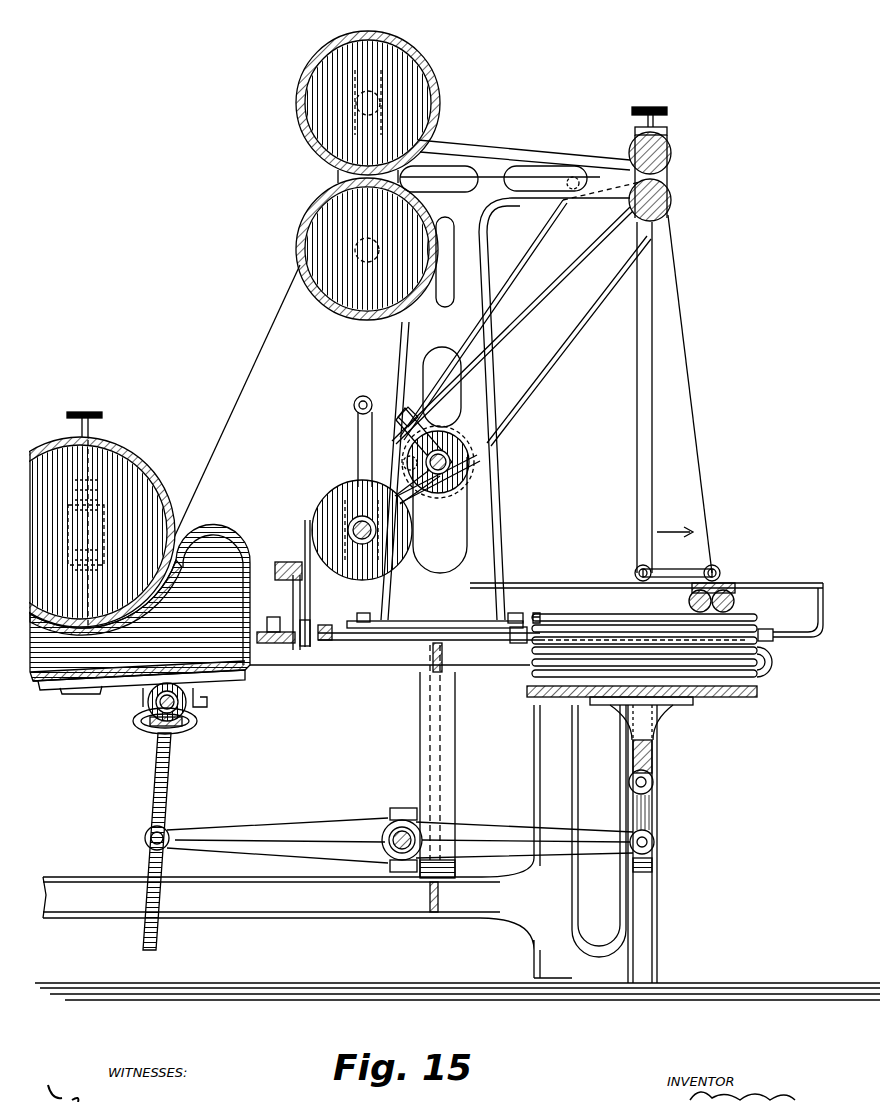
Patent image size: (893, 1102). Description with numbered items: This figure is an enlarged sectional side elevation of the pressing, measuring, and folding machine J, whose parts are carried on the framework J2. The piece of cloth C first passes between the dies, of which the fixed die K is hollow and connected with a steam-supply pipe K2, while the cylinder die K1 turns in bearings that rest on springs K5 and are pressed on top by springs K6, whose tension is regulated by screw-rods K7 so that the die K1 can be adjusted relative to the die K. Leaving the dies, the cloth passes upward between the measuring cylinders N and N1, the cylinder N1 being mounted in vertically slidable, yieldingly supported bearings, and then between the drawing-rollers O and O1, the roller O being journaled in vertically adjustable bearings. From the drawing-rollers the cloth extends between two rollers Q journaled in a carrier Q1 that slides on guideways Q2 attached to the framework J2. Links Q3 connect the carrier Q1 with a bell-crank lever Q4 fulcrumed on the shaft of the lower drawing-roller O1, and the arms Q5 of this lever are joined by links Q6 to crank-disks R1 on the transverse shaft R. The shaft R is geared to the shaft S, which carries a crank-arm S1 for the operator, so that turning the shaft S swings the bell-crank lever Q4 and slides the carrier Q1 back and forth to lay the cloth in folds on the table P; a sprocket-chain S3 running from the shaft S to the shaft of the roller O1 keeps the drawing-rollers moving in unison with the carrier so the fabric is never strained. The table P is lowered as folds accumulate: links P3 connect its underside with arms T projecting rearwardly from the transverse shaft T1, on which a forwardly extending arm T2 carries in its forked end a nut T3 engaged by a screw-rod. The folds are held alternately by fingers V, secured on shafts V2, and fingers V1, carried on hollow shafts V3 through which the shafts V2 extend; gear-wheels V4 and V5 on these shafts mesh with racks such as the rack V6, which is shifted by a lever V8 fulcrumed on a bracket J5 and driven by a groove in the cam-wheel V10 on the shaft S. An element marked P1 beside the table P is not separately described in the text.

The measuring-machine cylinder N1 is at (297, 112).
The measuring-machine cylinder N is at (298, 244).
The drawing-roller O is at (672, 154).
The drawing-roller O1 is at (672, 204).
The links Q6 is at (530, 252).
The arms of bell-crank lever Q5 is at (617, 225).
The bell-crank lever Q4 is at (640, 421).
The piece of cloth C is at (238, 379).
The screw-rods K7 is at (90, 412).
The springs K6 is at (90, 490).
The die K1 is at (128, 468).
The steam-supply pipe K2 is at (85, 527).
The springs K5 is at (88, 553).
The die K is at (234, 521).
The crank-arm S1 is at (356, 407).
The crank-disks R1 is at (423, 433).
The sprocket-chain S3 is at (538, 385).
The shaft R is at (452, 462).
The shaft S is at (350, 527).
The cam-wheel V10 is at (352, 517).
The bracket J5 is at (276, 568).
The pressing, measuring, and folding machine J is at (293, 612).
The lever V8 is at (311, 594).
The rack V6 is at (320, 625).
The gear-wheel V5 is at (326, 628).
The hollow shafts V3 is at (453, 631).
The fingers V1 is at (536, 618).
The links Q3 is at (690, 562).
The carrier Q1 is at (728, 584).
The guideways Q2 is at (787, 583).
The rollers Q is at (690, 602).
The fingers V is at (770, 632).
The framework J2 is at (397, 662).
The table P is at (730, 700).
The base plate P1 is at (752, 699).
The shafts V2 is at (148, 702).
The gear-wheel V4 is at (196, 703).
The nut T3 is at (145, 838).
The arm T2 is at (346, 828).
The shaft T1 is at (402, 820).
The arms T is at (500, 836).
The links P3 is at (650, 809).